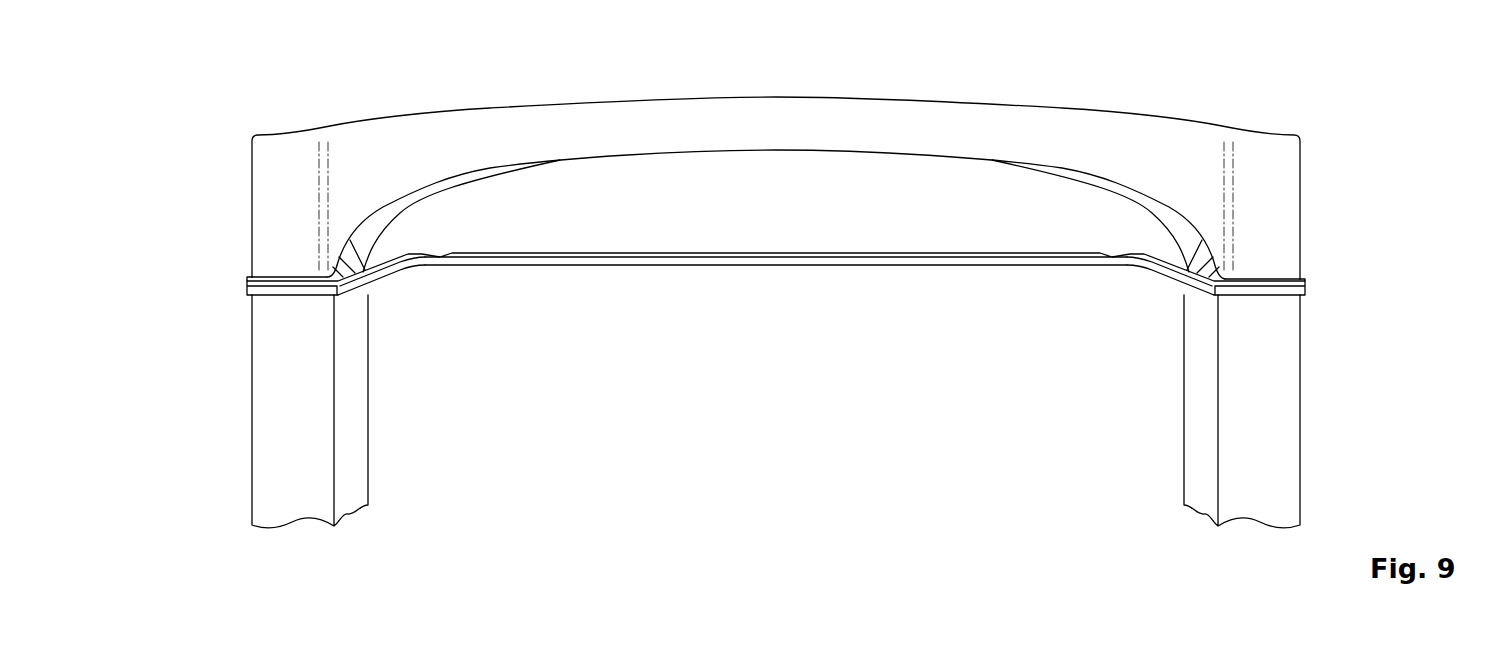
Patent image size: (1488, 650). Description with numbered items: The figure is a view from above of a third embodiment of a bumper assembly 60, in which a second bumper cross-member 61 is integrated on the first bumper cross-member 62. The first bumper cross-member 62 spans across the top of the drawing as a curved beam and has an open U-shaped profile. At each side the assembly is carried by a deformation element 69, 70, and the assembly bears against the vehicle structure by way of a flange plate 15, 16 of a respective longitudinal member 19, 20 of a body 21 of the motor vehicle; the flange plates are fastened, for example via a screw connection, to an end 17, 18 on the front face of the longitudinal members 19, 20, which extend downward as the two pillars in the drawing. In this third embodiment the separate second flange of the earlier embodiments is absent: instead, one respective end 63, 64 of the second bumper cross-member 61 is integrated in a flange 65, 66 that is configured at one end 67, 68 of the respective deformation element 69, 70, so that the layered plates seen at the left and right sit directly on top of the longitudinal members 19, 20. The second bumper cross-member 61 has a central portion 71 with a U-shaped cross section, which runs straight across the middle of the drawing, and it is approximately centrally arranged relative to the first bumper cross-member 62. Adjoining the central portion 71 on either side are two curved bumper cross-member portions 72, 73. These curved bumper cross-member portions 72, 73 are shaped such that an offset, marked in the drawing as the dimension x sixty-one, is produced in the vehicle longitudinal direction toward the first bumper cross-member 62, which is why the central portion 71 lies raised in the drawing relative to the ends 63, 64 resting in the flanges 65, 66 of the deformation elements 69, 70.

The bumper assembly 60 is at (776, 142).
The first bumper cross-member 62 is at (925, 115).
The deformation element 69 is at (258, 207).
The deformation element 70 is at (1292, 190).
The end of deformation element 67 is at (255, 277).
The end of deformation element 68 is at (1300, 276).
The second bumper cross-member 61 is at (776, 294).
The end of second bumper cross-member 63 is at (214, 288).
The flange 65 is at (247, 286).
The end of second bumper cross-member 64 is at (1338, 289).
The flange 66 is at (1307, 286).
The central portion 71 is at (830, 262).
The curved bumper cross-member portion 72 is at (400, 267).
The curved bumper cross-member portion 73 is at (1152, 272).
The flange plate 15 is at (229, 410).
The end on the front face 17 is at (246, 293).
The longitudinal member 19 is at (229, 410).
The flange plate 16 is at (1323, 410).
The end on the front face 18 is at (1307, 293).
The longitudinal member 20 is at (1323, 410).
The body 21 is at (776, 410).